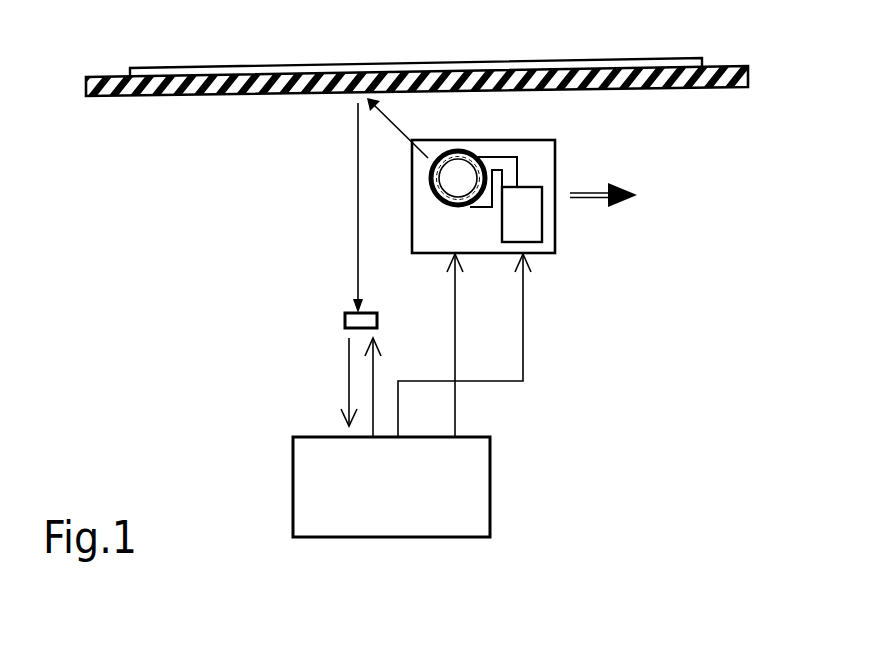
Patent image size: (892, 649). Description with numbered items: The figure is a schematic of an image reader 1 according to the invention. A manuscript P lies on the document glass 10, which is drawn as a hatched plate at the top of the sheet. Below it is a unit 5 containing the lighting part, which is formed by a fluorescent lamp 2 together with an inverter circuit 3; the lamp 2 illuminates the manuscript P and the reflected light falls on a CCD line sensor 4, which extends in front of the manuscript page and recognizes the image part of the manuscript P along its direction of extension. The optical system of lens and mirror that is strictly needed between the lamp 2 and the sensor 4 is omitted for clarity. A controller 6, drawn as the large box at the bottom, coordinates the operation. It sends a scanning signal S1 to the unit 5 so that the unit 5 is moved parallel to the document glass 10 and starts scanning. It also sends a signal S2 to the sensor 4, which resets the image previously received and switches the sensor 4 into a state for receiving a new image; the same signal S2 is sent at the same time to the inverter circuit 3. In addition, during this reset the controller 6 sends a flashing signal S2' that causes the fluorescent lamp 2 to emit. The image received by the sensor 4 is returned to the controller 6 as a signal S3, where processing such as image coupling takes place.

The image reader 1 is at (150, 307).
The fluorescent lamp 2 is at (470, 153).
The inverter circuit 3 is at (535, 197).
The CCD line sensor 4 is at (345, 321).
The unit 5 is at (551, 247).
The controller 6 is at (303, 493).
The document glass 10 is at (197, 95).
The manuscript P is at (260, 62).
The scanning signal S1 is at (453, 352).
The reset signal S2 is at (388, 374).
The flashing signal S2' is at (479, 345).
The image signal S3 is at (349, 372).